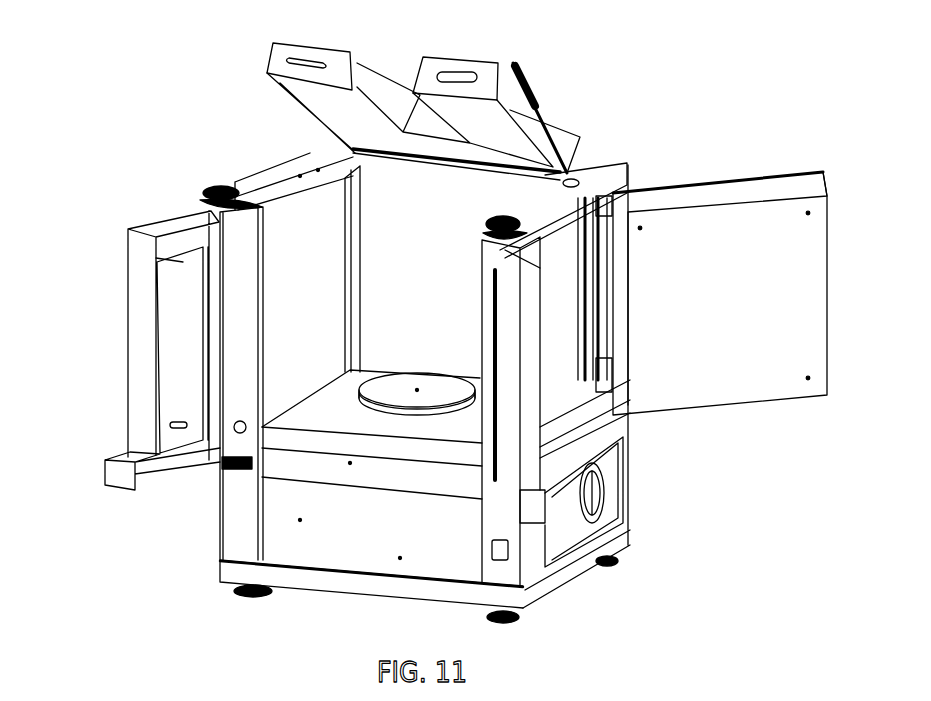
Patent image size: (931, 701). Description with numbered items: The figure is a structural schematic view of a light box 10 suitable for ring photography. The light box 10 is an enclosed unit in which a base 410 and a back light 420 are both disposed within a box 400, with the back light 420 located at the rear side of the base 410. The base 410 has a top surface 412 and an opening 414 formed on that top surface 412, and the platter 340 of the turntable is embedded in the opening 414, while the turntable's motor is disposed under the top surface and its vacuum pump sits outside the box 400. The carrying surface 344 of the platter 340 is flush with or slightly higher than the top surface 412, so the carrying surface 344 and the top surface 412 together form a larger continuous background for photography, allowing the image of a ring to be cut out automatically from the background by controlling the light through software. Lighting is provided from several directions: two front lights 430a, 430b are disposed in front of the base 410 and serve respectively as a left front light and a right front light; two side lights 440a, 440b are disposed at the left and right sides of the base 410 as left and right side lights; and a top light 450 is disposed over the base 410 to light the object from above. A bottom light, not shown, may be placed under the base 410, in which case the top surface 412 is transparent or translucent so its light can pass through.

The light box 10 is at (780, 624).
The platter 340 is at (388, 377).
The carrying surface 344 is at (437, 382).
The box 400 is at (653, 521).
The base 410 is at (453, 455).
The top surface 412 is at (298, 410).
The opening 414 is at (386, 416).
The back light 420 is at (417, 190).
The front light 430a is at (177, 358).
The front light 430b is at (513, 463).
The side light 440a is at (280, 247).
The side light 440b is at (745, 395).
The top light 450 is at (482, 76).